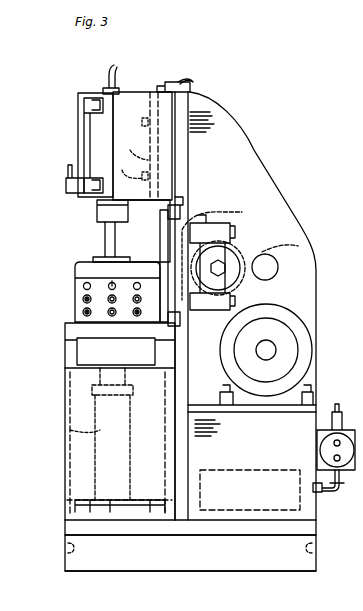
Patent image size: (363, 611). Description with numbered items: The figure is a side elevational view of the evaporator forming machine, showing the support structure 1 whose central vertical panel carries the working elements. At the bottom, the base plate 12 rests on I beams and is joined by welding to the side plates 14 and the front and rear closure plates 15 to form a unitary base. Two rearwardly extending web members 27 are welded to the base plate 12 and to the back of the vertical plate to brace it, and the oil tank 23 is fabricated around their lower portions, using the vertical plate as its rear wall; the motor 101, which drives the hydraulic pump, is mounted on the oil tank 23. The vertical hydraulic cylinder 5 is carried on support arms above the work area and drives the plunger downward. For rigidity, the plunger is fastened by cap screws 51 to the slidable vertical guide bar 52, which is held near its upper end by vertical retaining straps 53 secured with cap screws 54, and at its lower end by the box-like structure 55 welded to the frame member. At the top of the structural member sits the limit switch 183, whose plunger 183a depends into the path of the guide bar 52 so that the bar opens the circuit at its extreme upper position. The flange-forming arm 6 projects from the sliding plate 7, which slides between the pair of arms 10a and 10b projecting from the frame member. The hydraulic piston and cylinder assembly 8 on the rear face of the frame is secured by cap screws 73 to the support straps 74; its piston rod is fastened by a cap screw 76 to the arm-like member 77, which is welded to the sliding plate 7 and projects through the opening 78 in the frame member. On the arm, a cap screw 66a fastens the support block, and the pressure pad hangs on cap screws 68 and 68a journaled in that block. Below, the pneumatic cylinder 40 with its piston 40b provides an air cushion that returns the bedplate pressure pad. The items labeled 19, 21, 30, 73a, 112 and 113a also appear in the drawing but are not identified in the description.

The support structure 1 is at (163, 578).
The vertical hydraulic cylinder 5 is at (71, 122).
The flange-forming arm 6 is at (67, 286).
The sliding plate 7 is at (165, 250).
The hydraulic piston and cylinder assembly 8 is at (239, 253).
The arm 10a is at (178, 325).
The arm 10b is at (176, 207).
The base plate 12 is at (75, 527).
The side plates 14 is at (111, 565).
The front and rear closure plates 15 is at (66, 550).
The cabinet 19 is at (68, 391).
The support block 21 is at (72, 355).
The oil tank 23 is at (326, 517).
The web members 27 is at (266, 186).
The bore 30 is at (318, 563).
The pneumatic cylinder 40 is at (68, 423).
The piston 40b is at (100, 470).
The cap screws 51 is at (160, 222).
The slidable vertical guide bar 52 is at (158, 92).
The vertical retaining straps 53 is at (132, 150).
The cap screws 54 is at (129, 170).
The box-like structure 55 is at (150, 416).
The cap screw 66a is at (112, 280).
The cap screw 68 is at (83, 299).
The cap screw 68a is at (83, 313).
The cap screws 73 is at (83, 297).
The bolt 73a is at (83, 311).
The support straps 74 is at (268, 251).
The cap screw 76 is at (224, 272).
The arm-like member 77 is at (275, 258).
The opening 78 is at (212, 256).
The motor 101 is at (312, 354).
The hydraulic line 112 is at (106, 70).
The hydraulic fitting 113a is at (67, 168).
The limit switch 183 is at (192, 80).
The plunger 183a is at (170, 82).